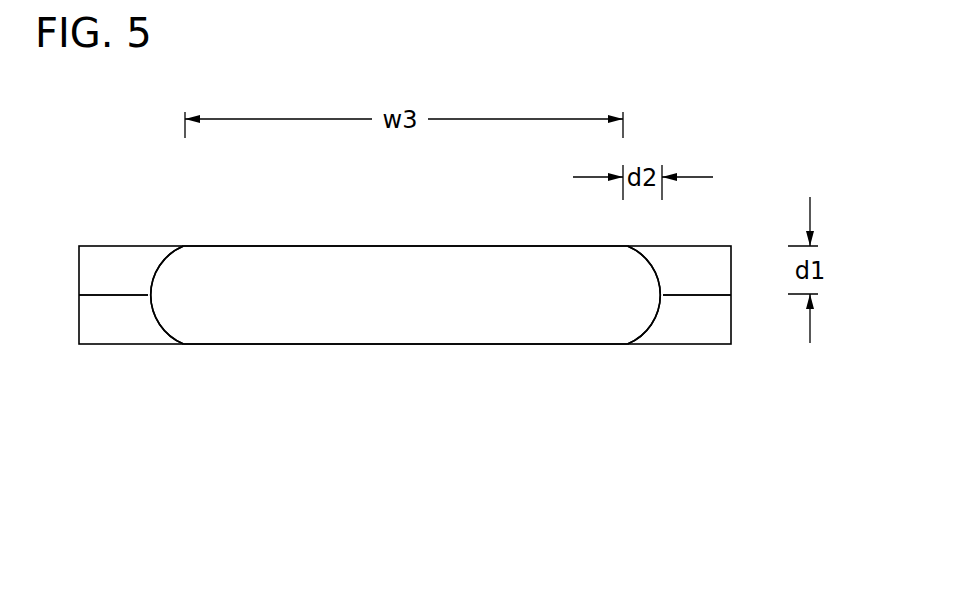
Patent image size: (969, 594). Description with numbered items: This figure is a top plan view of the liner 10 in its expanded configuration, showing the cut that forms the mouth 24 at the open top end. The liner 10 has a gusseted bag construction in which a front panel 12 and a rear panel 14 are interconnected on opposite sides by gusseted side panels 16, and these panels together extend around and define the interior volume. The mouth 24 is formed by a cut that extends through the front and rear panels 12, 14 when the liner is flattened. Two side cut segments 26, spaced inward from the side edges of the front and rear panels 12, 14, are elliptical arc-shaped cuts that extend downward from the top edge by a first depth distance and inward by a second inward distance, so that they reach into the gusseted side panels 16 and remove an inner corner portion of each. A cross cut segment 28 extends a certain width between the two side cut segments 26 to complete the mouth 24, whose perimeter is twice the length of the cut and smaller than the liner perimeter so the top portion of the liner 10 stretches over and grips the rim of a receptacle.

The liner 10 is at (455, 442).
The front panel 12 is at (703, 318).
The rear panel 14 is at (698, 263).
The gusseted side panels 16 is at (79, 303).
The mouth 24 is at (235, 312).
The side cut segments 26 is at (156, 277).
The cross cut segment 28 is at (483, 252).